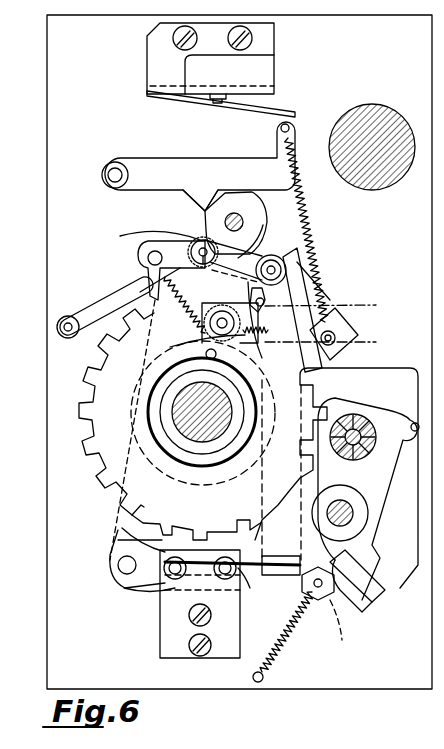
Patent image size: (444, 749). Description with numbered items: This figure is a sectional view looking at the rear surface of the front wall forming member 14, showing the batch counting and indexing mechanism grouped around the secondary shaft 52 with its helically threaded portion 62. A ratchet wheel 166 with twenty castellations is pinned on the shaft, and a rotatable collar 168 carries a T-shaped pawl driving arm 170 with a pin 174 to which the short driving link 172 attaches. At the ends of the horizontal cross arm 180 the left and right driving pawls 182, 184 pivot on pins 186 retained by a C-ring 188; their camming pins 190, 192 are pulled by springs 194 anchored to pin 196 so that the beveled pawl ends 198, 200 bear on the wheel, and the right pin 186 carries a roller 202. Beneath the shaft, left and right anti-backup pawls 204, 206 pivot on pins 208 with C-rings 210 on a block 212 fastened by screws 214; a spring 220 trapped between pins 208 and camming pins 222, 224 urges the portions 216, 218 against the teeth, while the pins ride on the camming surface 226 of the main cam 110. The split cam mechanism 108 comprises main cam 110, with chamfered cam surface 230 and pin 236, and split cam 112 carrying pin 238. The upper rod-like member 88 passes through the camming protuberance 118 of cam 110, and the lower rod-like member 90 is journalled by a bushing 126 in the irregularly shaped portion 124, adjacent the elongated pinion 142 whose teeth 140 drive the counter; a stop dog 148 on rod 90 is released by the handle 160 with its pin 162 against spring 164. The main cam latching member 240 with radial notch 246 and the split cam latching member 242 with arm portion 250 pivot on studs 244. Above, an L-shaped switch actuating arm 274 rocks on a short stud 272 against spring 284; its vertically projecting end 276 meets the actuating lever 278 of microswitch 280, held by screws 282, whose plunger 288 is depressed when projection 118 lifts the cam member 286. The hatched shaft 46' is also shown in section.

The front wall forming member 14 is at (384, 55).
The drive shaft 46' is at (372, 132).
The secondary shaft 52 is at (212, 438).
The helically threaded portion 62 is at (222, 417).
The upper rod-like member 88 is at (238, 222).
The lower rod-like member 90 is at (348, 525).
The split cam mechanism 108 is at (116, 525).
The main cam 110 is at (125, 500).
The split cam 112 is at (263, 375).
The camming protuberance 118 is at (232, 210).
The irregularly shaped portion 124 is at (376, 509).
The bushing 126 is at (353, 545).
The teeth 140 is at (363, 457).
The elongated pinion 142 is at (340, 450).
The stop dog 148 is at (358, 606).
The projecting handle 160 is at (342, 630).
The pin 162 is at (318, 602).
The spring 164 is at (265, 677).
The ratchet wheel 166 is at (86, 447).
The rotatable collar 168 is at (235, 417).
The pawl driving arm 170 is at (172, 432).
The short driving link 172 is at (386, 306).
The pin 174 is at (280, 330).
The horizontal cross arm 180 is at (268, 213).
The left driving pawl 182 is at (129, 262).
The right driving pawl 184 is at (328, 298).
The pins 186 is at (202, 246).
The C-ring 188 is at (196, 244).
The camming pin 190 is at (150, 250).
The camming pin 192 is at (330, 312).
The springs 194 is at (170, 347).
The pin 196 is at (160, 380).
The left projecting pawl end 198 is at (165, 300).
The right projecting pawl end 200 is at (322, 362).
The roller 202 is at (273, 256).
The left anti-backup pawl 204 is at (136, 592).
The right anti-backup pawl 206 is at (310, 594).
The pin 208 is at (224, 580).
The C-ring 210 is at (174, 580).
The block 212 is at (226, 648).
The screws 214 is at (203, 627).
The right upwardly projecting portion 216 is at (118, 540).
The left upwardly projecting portion 218 is at (256, 532).
The spring 220 is at (200, 556).
The camming pin 222 is at (122, 572).
The camming pin 224 is at (264, 568).
The camming surface 226 is at (168, 542).
The cam surface 230 is at (175, 238).
The pin 236 is at (190, 312).
The pin 238 is at (320, 292).
The main cam latching member 240 is at (84, 304).
The split cam latching member 242 is at (356, 343).
The stud 244 is at (68, 338).
The radial notch 246 is at (140, 293).
The arm portion 250 is at (310, 252).
The short stud 272 is at (116, 166).
The switch actuating arm 274 is at (228, 152).
The vertically projecting end 276 is at (297, 130).
The actuating lever 278 is at (278, 108).
The microswitch 280 is at (186, 72).
The screws 282 is at (172, 36).
The spring 284 is at (303, 192).
The cam member 286 is at (190, 200).
The plunger 288 is at (217, 100).